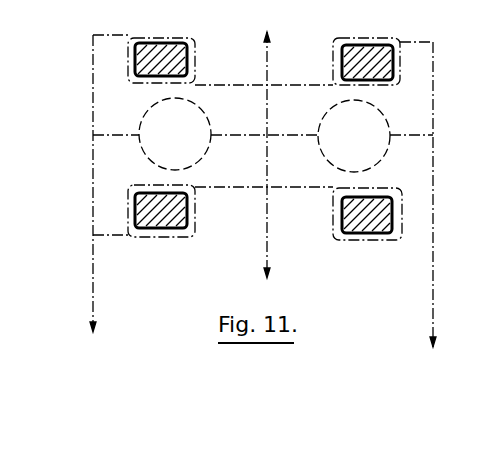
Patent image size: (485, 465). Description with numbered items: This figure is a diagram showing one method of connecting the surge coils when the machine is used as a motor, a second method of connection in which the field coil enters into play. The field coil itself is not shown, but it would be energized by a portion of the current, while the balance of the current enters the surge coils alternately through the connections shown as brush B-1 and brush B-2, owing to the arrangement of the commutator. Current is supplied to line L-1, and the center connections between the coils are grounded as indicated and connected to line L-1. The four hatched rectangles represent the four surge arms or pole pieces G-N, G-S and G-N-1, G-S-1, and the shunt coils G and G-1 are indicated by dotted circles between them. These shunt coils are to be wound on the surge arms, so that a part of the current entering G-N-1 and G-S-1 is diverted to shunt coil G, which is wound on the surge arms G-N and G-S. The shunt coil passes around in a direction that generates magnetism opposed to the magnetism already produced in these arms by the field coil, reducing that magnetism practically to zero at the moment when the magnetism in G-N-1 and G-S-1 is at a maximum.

The surge arm G-N-1 is at (161, 51).
The surge arm G-N is at (366, 52).
The surge arm G-S-1 is at (161, 203).
The surge arm G-S is at (367, 206).
The shunt coil G is at (175, 134).
The shunt coil G-1 is at (354, 136).
The brush B-1 is at (106, 183).
The brush B-2 is at (413, 194).
The line L-1 is at (264, 155).